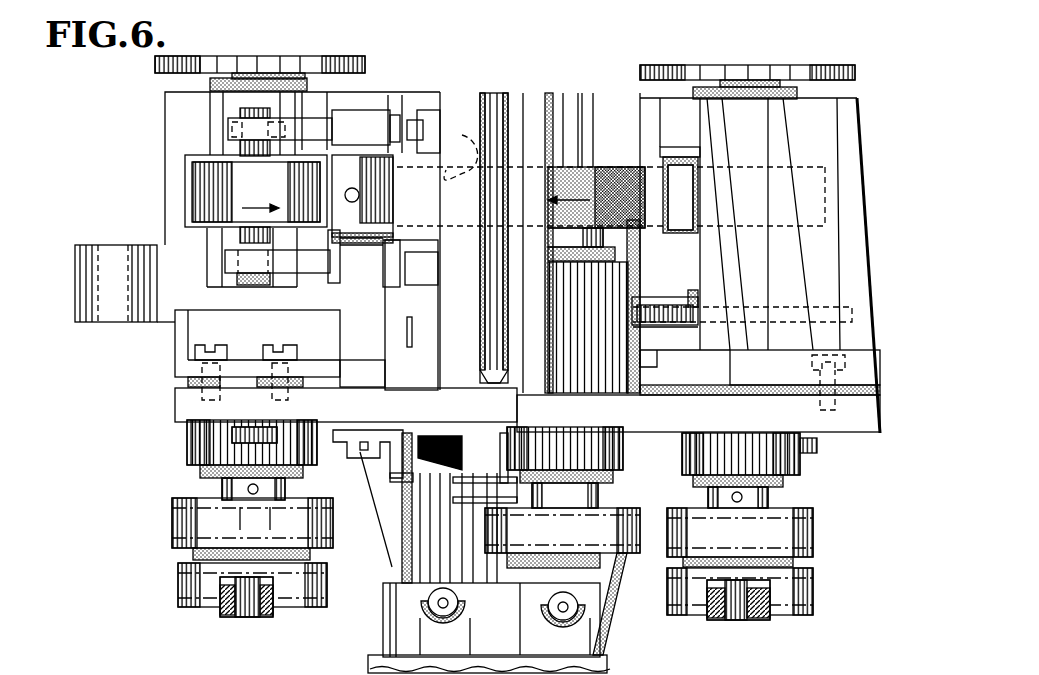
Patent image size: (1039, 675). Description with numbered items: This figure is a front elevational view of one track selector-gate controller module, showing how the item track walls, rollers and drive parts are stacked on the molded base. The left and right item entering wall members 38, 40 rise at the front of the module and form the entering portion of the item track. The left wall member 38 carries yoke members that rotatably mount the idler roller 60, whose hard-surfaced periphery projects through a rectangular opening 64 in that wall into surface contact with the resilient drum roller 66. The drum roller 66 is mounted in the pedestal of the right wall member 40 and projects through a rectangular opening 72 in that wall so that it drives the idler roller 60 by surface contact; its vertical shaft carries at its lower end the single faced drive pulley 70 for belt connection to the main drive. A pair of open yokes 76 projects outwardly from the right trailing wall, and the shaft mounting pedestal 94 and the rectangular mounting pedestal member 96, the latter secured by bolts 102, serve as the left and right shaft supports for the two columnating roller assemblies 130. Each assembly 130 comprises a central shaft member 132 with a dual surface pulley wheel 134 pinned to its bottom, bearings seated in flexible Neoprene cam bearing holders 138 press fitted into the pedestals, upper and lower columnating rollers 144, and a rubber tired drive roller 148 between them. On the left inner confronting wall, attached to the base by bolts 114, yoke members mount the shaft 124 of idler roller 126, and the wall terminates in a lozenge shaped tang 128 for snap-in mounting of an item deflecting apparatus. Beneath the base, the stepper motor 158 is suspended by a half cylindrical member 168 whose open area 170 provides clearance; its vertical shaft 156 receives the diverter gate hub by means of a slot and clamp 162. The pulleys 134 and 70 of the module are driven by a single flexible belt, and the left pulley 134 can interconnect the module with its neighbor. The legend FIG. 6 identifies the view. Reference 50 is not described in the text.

The left item entering wall member 38 is at (470, 308).
The right item entering wall member 40 is at (503, 333).
The spindle carrier 50 is at (495, 92).
The idler roller 60 is at (385, 196).
The rectangular opening 64 is at (461, 145).
The resilient drum roller 66 is at (585, 180).
The single faced drive pulley 70 is at (612, 565).
The rectangular opening 72 is at (540, 167).
The open yokes 76 is at (228, 128).
The shaft mounting pedestal 94 is at (165, 183).
The mounting pedestal member 96 is at (827, 253).
The bolts 102 is at (812, 362).
The bolts 114 is at (283, 345).
The shaft 124 is at (258, 77).
The idler roller 126 is at (270, 193).
The lozenge shaped tang 128 is at (100, 306).
The columnating roller assembly 130 is at (334, 52).
The central shaft member 132 is at (260, 615).
The dual surface pulley wheel 134 is at (193, 556).
The flexible Neoprene cam bearing holder 138 is at (210, 83).
The columnating rollers 144 is at (368, 70).
The rubber tired drive roller 148 is at (663, 170).
The shaft of stepper motor 156 is at (507, 570).
The stepper motor 158 is at (620, 664).
The clamp 162 is at (469, 490).
The half cylindrical member 168 is at (443, 558).
The open area 170 is at (378, 490).